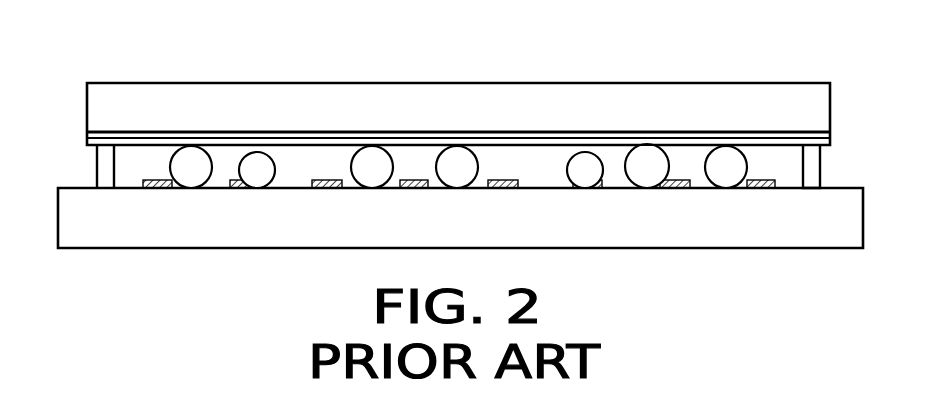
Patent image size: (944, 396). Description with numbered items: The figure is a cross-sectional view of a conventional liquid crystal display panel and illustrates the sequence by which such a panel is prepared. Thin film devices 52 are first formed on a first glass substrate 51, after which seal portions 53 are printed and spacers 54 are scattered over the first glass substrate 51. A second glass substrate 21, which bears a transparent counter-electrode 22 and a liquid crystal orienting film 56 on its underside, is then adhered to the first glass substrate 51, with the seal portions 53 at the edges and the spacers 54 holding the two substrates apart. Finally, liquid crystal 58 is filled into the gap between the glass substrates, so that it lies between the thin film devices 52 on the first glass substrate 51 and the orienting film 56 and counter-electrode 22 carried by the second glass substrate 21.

The second glass substrate 21 is at (350, 103).
The transparent counter-electrode 22 is at (640, 143).
The first glass substrate 51 is at (775, 232).
The thin film devices 52 is at (507, 185).
The seal portions 53 is at (103, 172).
The spacers 54 is at (452, 158).
The liquid crystal orienting film 56 is at (700, 148).
The liquid crystal 58 is at (538, 162).